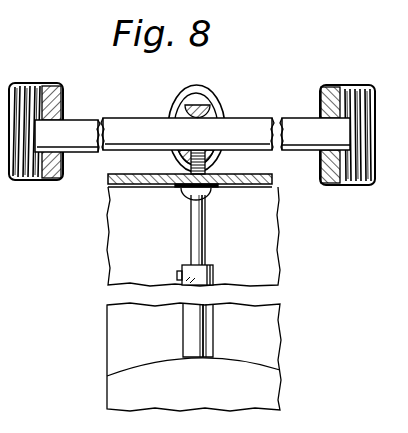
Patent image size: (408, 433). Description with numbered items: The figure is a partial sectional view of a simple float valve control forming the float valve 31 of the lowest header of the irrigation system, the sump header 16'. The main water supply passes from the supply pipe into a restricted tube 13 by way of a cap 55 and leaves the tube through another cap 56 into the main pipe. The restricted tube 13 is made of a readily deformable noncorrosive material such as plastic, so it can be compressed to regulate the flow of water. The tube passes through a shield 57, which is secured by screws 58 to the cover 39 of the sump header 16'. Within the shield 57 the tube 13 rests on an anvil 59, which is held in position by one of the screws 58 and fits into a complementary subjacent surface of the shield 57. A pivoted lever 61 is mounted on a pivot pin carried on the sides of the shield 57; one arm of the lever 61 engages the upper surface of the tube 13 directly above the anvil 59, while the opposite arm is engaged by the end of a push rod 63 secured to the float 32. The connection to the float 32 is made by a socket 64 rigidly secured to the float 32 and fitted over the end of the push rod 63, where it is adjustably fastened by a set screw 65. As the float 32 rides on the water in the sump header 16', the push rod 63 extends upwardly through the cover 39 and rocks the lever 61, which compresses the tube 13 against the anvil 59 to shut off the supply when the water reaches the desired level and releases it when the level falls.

The cap 55 is at (73, 77).
The cap 56 is at (344, 87).
The restricted tube 13 is at (129, 121).
The shield 57 is at (189, 90).
The float valve 31 is at (243, 81).
The pivoted lever 61 is at (210, 110).
The anvil 59 is at (215, 155).
The screws 58 is at (208, 196).
The cover 39 is at (110, 182).
The sump header 16' is at (178, 236).
The push rod 63 is at (198, 232).
The set screw 65 is at (180, 275).
The socket 64 is at (192, 322).
The float 32 is at (223, 358).